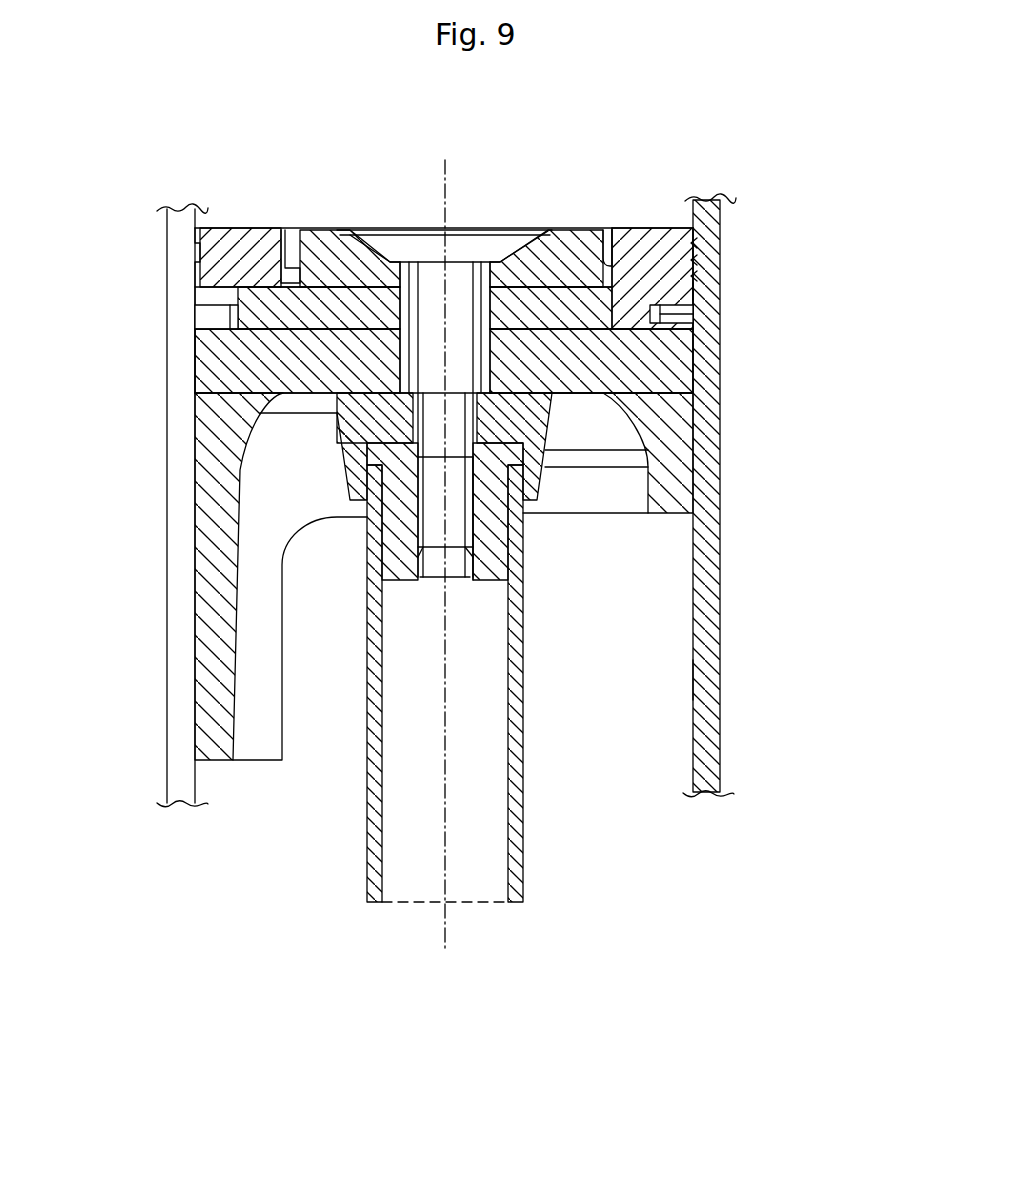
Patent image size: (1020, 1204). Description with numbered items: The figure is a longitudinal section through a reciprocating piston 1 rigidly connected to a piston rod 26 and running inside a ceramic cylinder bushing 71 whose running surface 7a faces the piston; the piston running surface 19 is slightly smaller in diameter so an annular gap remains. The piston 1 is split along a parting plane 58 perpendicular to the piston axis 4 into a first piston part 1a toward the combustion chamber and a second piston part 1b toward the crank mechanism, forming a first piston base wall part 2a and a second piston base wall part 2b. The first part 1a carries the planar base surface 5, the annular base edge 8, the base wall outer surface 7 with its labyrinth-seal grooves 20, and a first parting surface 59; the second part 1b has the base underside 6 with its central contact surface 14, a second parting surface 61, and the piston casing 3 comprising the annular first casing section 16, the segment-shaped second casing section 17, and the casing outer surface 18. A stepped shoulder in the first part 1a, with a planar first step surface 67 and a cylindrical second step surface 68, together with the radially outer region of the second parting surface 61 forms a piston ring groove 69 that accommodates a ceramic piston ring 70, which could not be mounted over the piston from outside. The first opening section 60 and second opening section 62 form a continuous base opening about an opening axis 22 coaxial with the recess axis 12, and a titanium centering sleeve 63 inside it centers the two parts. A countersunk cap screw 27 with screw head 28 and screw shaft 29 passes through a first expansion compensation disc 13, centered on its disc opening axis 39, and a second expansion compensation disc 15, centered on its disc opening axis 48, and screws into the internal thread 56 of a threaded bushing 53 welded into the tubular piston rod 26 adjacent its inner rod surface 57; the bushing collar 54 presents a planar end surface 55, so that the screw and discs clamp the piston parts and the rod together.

The reciprocating piston 1 is at (185, 148).
The first piston part 1a is at (635, 258).
The second piston part 1b is at (673, 438).
The first piston base wall part 2a is at (650, 285).
The second piston base wall part 2b is at (612, 352).
The piston casing 3 is at (677, 497).
The piston axis 4 is at (576, 595).
The base surface 5 is at (205, 225).
The base underside 6 is at (651, 446).
The base wall outer surface 7 is at (700, 287).
The inner wall surface 7a is at (690, 690).
The base edge 8 is at (700, 218).
The recess axis 12 is at (576, 595).
The first expansion compensation disc 13 is at (565, 263).
The contact surface 14 is at (574, 400).
The second expansion compensation disc 15 is at (375, 432).
The first casing section 16 is at (670, 462).
The second casing section 17 is at (213, 643).
The casing outer surface 18 is at (193, 547).
The piston running surface 19 is at (193, 403).
The grooves 20 is at (697, 275).
The opening axis 22 is at (576, 595).
The piston rod 26 is at (517, 833).
The cap screw 27 is at (402, 247).
The screw head 28 is at (478, 247).
The screw shaft 29 is at (405, 376).
The disc opening axis 39 is at (576, 595).
The disc opening axis 48 is at (448, 948).
The threaded bushing 53 is at (497, 550).
The bushing collar 54 is at (372, 448).
The end surface 55 is at (380, 440).
The internal thread 56 is at (468, 518).
The inner rod surface 57 is at (388, 875).
The parting plane 58 is at (737, 328).
The first parting surface 59 is at (330, 345).
The first opening section 60 is at (388, 262).
The second parting surface 61 is at (262, 325).
The second opening section 62 is at (437, 370).
The centering sleeve 63 is at (610, 380).
The first step surface 67 is at (660, 307).
The second step surface 68 is at (650, 318).
The piston ring groove 69 is at (161, 288).
The piston ring 70 is at (205, 323).
The cylinder bushing 71 is at (703, 730).